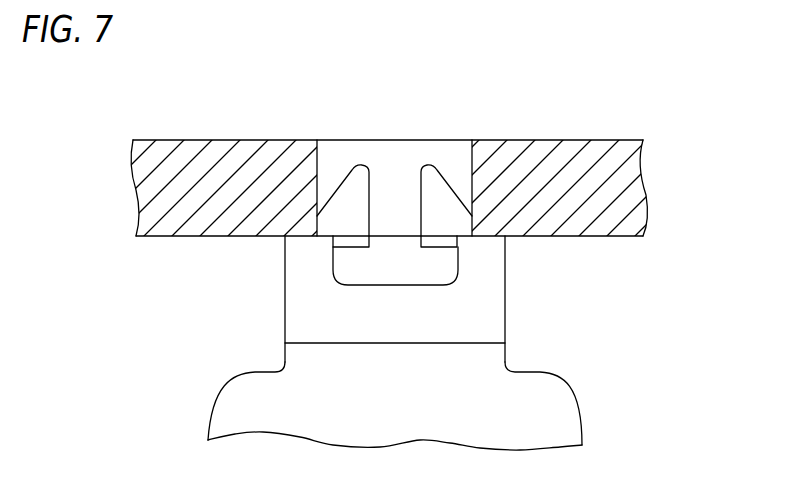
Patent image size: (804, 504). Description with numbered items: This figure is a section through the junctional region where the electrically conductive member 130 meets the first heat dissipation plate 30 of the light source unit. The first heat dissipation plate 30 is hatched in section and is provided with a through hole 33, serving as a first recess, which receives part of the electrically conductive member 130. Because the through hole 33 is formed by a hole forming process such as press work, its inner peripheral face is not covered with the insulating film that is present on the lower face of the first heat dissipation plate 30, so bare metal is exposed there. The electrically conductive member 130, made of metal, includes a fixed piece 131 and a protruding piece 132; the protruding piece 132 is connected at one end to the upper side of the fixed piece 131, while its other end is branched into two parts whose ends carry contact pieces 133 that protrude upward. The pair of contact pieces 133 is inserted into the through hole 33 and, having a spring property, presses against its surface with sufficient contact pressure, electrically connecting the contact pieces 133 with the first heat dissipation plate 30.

The first heat dissipation plate 30 is at (253, 140).
The through hole 33 is at (393, 160).
The electrically conductive member 130 is at (206, 399).
The fixed piece 131 is at (533, 413).
The protruding piece 132 is at (482, 296).
The contact piece 133 is at (354, 170).